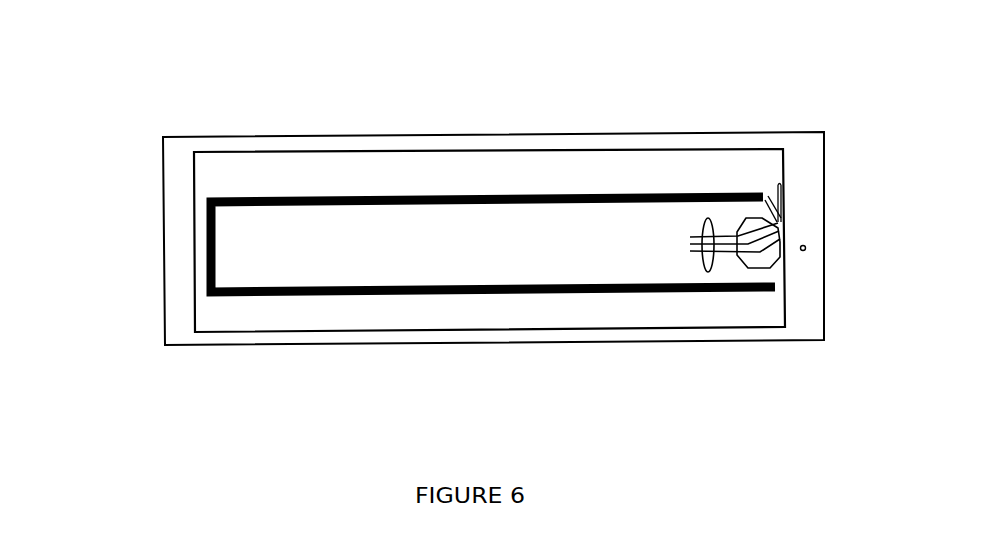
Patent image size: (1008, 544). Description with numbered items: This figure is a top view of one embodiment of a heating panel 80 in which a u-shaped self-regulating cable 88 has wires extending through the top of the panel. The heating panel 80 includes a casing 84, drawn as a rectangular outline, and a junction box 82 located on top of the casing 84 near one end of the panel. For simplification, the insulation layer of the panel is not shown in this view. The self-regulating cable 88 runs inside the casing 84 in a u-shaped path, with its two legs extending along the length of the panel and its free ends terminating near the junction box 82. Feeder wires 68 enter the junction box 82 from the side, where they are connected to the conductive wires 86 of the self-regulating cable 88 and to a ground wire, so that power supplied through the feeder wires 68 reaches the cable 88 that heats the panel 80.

The heating panel 80 is at (136, 70).
The casing 84 is at (181, 300).
The self-regulating cable 88 is at (465, 293).
The conductive wires 86 is at (777, 225).
The feeder wires 68 is at (715, 263).
The junction box 82 is at (762, 262).